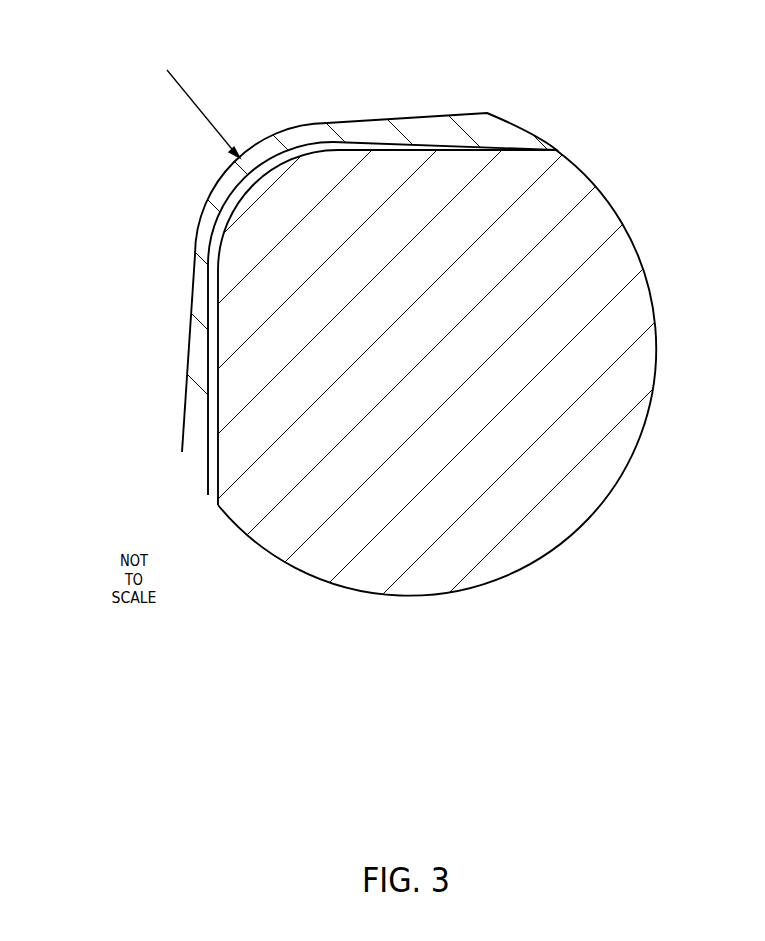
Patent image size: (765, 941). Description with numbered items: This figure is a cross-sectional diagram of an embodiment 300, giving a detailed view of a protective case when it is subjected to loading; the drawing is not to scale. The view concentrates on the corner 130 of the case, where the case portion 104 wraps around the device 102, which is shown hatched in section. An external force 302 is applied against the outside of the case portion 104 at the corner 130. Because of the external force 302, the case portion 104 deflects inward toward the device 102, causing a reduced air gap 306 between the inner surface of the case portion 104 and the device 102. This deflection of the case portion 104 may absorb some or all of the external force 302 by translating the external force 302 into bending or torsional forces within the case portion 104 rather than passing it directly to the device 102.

The device 102 is at (490, 375).
The case portion 104 is at (425, 120).
The corner 130 is at (272, 136).
The embodiment 300 is at (382, 405).
The external force 302 is at (162, 90).
The reduced air gap 306 is at (250, 192).